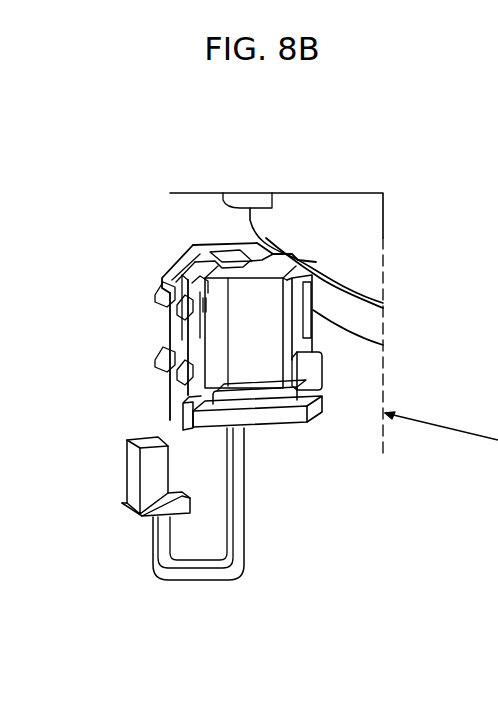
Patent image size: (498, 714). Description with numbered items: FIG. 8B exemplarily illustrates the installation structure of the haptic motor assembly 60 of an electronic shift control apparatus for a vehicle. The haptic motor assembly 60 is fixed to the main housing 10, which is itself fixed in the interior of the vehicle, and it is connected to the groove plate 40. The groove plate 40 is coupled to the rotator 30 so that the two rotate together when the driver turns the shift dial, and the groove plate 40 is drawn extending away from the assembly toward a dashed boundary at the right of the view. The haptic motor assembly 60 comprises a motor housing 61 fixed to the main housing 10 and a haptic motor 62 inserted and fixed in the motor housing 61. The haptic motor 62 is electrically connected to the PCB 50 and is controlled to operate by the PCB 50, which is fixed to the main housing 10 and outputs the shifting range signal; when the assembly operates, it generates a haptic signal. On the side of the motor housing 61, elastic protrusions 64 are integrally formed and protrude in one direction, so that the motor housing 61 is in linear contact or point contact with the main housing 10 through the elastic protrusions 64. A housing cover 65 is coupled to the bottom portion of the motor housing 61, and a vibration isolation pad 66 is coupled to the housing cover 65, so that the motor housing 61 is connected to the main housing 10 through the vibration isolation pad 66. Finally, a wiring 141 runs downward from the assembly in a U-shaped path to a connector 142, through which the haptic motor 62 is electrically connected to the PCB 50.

The main housing 10 is at (497, 503).
The rotator 30 is at (358, 238).
The groove plate 40 is at (367, 320).
The Printed Circuit Board (PCB) 50 is at (497, 615).
The haptic motor assembly 60 is at (175, 248).
The motor housing 61 is at (252, 300).
The haptic motor 62 is at (231, 270).
The elastic protrusion 64 is at (170, 303).
The housing cover 65 is at (313, 377).
The vibration isolation pad 66 is at (183, 411).
The wiring 141 is at (155, 553).
The connector 142 is at (137, 475).